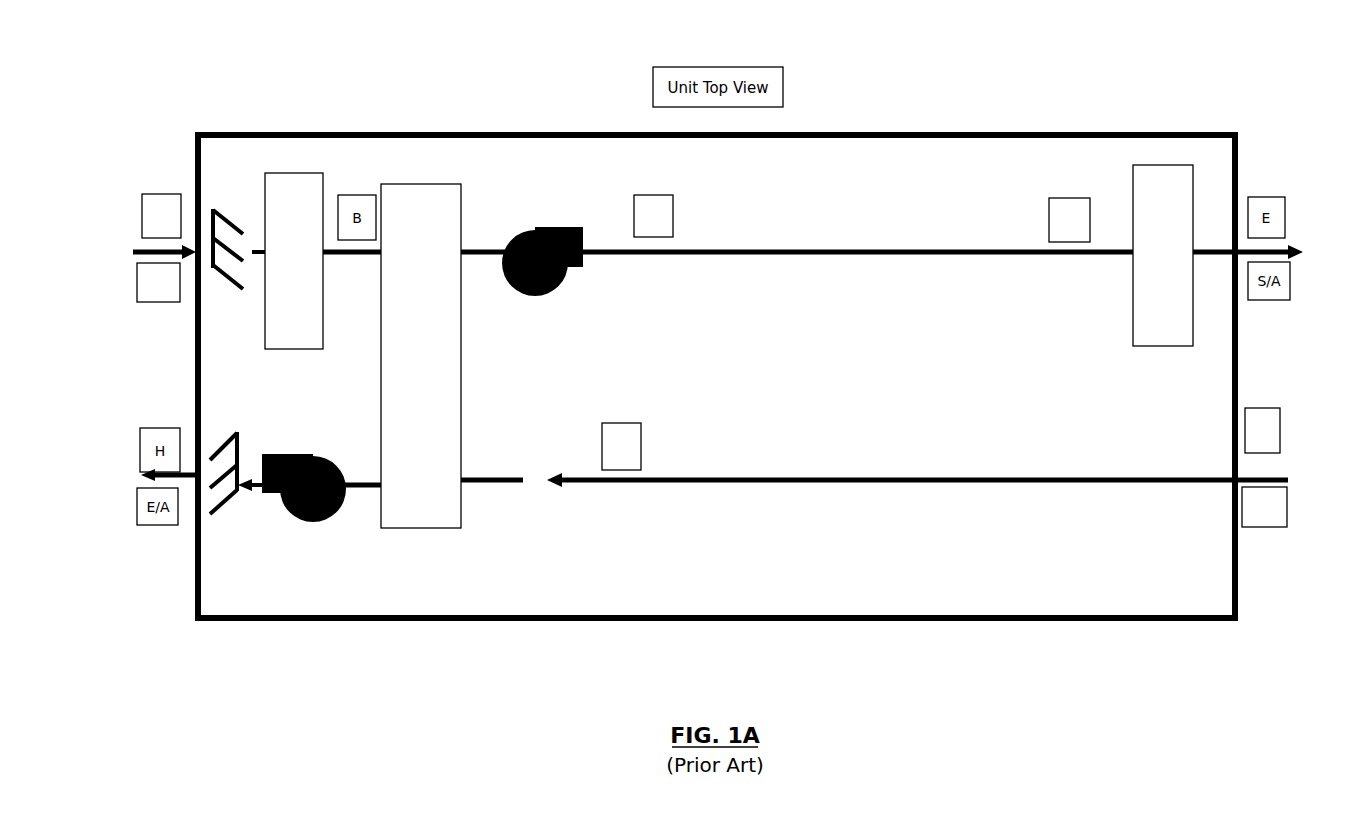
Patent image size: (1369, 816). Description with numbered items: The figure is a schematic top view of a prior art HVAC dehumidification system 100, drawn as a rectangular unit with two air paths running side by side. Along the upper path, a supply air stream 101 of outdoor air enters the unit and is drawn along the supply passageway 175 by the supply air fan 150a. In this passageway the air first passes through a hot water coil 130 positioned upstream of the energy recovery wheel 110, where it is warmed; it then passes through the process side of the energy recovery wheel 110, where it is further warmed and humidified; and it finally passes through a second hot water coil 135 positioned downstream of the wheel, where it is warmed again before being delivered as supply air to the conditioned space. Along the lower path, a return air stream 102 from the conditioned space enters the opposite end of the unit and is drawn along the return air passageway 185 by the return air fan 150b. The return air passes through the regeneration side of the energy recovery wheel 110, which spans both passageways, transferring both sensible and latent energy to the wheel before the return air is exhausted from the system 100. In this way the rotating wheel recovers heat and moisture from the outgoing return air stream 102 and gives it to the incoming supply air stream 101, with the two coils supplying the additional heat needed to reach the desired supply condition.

The system 100 is at (220, 112).
The supply air stream 101 is at (122, 247).
The return air stream 102 is at (1297, 468).
The energy recovery wheel 110 is at (406, 422).
The hot water coil 130 is at (309, 309).
The hot water coil 135 is at (1146, 313).
The supply air fan 150a is at (560, 222).
The return air fan 150b is at (302, 448).
The supply passageway 175 is at (918, 263).
The return air passageway 185 is at (962, 473).